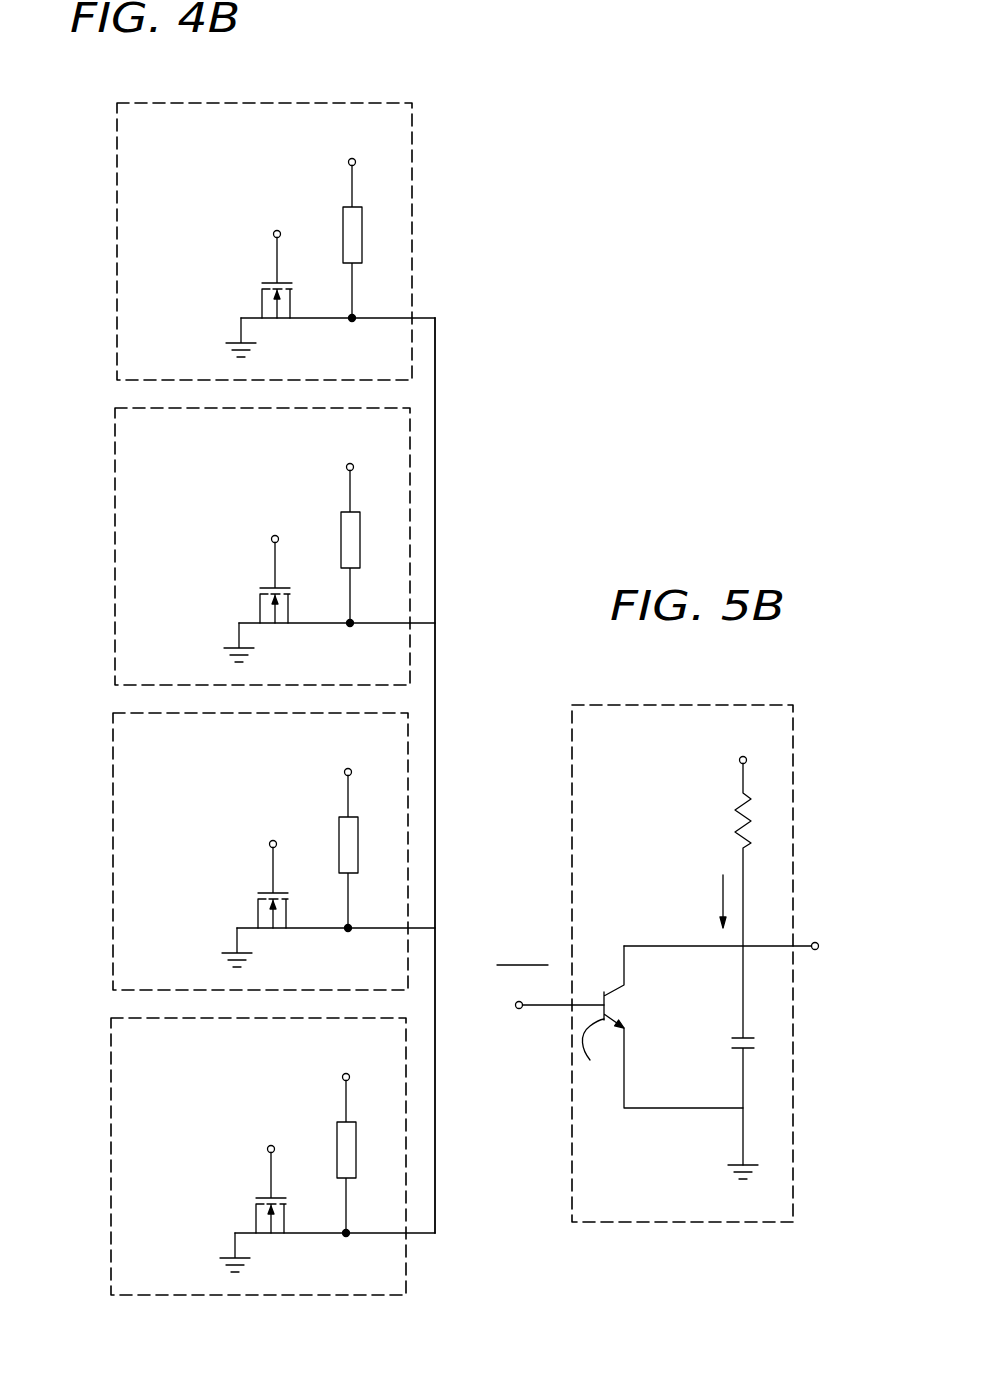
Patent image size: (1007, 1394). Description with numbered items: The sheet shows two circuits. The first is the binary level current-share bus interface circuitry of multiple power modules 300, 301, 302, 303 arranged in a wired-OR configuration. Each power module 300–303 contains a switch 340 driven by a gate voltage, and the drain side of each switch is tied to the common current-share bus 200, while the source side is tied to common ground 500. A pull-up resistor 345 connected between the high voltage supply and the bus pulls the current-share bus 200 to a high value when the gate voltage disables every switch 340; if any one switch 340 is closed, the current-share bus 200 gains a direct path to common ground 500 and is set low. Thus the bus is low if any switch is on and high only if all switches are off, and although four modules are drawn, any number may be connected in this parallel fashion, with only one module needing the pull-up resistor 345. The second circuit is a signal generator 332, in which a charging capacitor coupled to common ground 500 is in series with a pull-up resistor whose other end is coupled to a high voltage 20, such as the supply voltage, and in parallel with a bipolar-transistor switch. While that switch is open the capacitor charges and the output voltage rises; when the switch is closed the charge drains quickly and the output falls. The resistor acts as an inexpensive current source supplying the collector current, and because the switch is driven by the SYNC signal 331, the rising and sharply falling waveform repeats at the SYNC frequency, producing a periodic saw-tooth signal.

In FIG. 4B, the power module 300 is at (117, 193).
In FIG. 4B, the power module 301 is at (230, 546).
In FIG. 4B, the power module 302 is at (228, 851).
In FIG. 4B, the power module 303 is at (228, 1156).
In FIG. 4B, the high voltage 20 is at (349, 163).
In FIG. 5B, the high voltage 20 is at (740, 761).
In FIG. 4B, the pull-up resistor 345 is at (362, 240).
In FIG. 4B, the switch S1 340 is at (262, 300).
In FIG. 4B, the common ground 500 is at (232, 343).
In FIG. 5B, the common ground 500 is at (725, 1172).
In FIG. 4B, the current-share bus 200 is at (437, 497).
In FIG. 5B, the signal generator 332 is at (683, 703).
In FIG. 5B, the SYNC signal 331 is at (519, 1010).